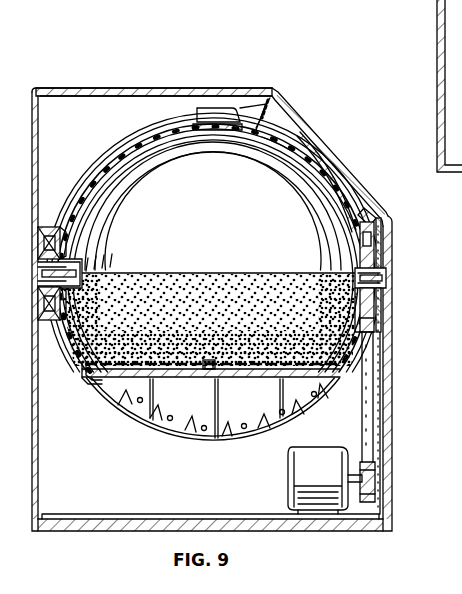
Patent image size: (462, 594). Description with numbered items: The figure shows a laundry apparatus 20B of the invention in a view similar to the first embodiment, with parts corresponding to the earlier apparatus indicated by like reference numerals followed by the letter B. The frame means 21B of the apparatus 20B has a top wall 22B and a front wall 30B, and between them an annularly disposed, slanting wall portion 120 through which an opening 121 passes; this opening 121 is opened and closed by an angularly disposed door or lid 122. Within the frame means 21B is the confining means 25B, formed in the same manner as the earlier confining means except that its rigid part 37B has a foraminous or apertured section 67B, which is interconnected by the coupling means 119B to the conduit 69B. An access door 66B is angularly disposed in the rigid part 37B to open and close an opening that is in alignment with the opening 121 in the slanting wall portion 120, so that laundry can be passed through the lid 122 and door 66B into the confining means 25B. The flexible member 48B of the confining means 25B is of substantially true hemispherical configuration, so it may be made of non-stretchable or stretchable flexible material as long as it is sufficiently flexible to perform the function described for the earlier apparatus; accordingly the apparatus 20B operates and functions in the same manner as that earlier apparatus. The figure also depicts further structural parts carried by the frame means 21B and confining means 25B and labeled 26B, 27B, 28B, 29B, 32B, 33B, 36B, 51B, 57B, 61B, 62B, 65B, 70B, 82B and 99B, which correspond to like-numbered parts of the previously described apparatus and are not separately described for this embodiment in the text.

The laundry apparatus 20B is at (80, 62).
The frame means 21B is at (392, 402).
The top wall 22B is at (141, 88).
The confining means 25B is at (350, 396).
The right bearing 26B is at (382, 270).
The left bearing 27B is at (68, 257).
The bearing support 28B is at (383, 300).
The tub flange 29B is at (90, 370).
The front wall 30B is at (392, 368).
The bracket 32B is at (380, 318).
The gear block 33B is at (360, 422).
The motor 36B is at (286, 472).
The rigid part 37B is at (116, 157).
The flexible member 48B is at (178, 282).
The vane 51B is at (258, 369).
The perforated bottom 57B is at (156, 430).
The agitator plate 61B is at (178, 360).
The tub 62B is at (113, 191).
The drum opening rim 65B is at (280, 149).
The access door 66B is at (330, 168).
The apertured section 67B is at (232, 153).
The conduit 69B is at (130, 135).
The shaft 70B is at (58, 290).
The bottom bracket 82B is at (92, 374).
The pivot 99B is at (220, 358).
The coupling means 119B is at (212, 104).
The wall portion 120 is at (312, 137).
The opening 121 is at (286, 114).
The door or lid 122 is at (370, 204).